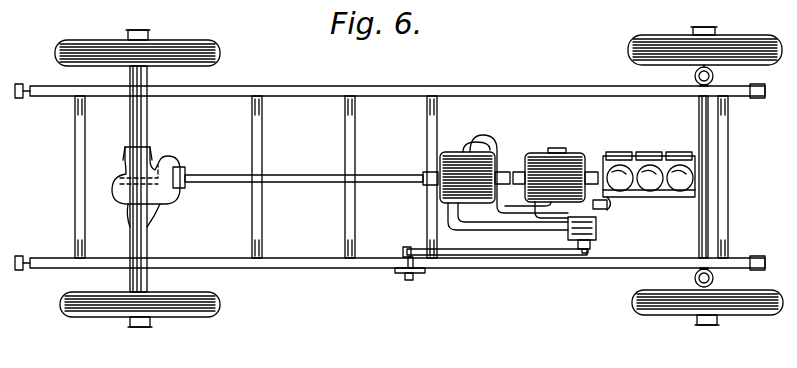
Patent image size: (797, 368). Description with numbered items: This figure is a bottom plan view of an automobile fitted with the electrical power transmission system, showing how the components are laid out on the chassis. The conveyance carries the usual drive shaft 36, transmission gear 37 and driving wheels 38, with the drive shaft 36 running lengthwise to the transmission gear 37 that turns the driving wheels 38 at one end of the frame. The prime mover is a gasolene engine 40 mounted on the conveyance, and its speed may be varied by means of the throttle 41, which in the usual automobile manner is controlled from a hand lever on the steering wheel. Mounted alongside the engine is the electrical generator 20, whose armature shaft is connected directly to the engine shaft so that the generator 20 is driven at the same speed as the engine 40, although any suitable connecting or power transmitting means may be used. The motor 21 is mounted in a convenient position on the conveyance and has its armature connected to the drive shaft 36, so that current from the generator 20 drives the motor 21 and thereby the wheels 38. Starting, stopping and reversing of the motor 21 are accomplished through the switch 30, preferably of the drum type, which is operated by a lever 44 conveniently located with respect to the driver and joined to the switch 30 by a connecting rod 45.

The electrical generator 20 is at (540, 153).
The motor 21 is at (449, 152).
The starting, stopping and reversing switch 30 is at (598, 234).
The drive shaft 36 is at (311, 173).
The transmission gear 37 is at (168, 162).
The driving wheels 38 is at (181, 43).
The gasolene engine 40 is at (658, 157).
The throttle 41 is at (607, 207).
The lever 44 is at (410, 281).
The connecting rod 45 is at (505, 256).